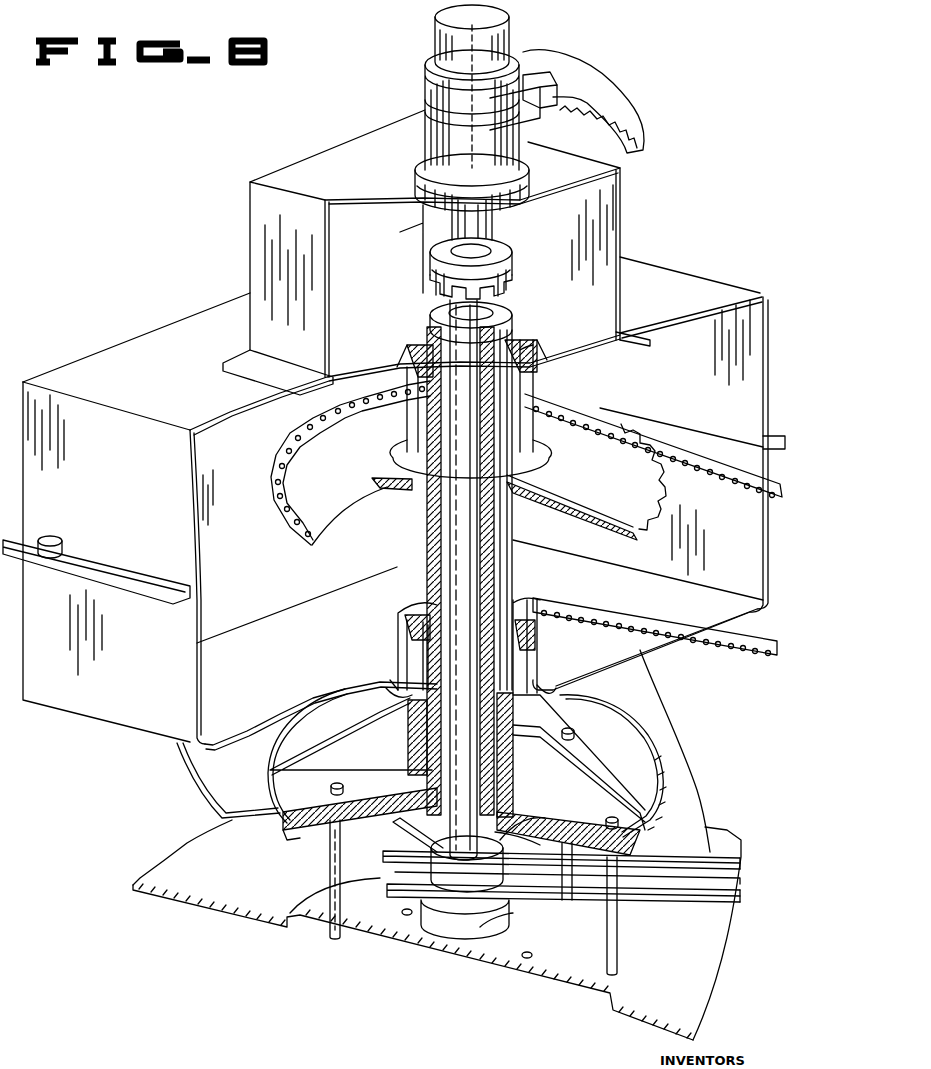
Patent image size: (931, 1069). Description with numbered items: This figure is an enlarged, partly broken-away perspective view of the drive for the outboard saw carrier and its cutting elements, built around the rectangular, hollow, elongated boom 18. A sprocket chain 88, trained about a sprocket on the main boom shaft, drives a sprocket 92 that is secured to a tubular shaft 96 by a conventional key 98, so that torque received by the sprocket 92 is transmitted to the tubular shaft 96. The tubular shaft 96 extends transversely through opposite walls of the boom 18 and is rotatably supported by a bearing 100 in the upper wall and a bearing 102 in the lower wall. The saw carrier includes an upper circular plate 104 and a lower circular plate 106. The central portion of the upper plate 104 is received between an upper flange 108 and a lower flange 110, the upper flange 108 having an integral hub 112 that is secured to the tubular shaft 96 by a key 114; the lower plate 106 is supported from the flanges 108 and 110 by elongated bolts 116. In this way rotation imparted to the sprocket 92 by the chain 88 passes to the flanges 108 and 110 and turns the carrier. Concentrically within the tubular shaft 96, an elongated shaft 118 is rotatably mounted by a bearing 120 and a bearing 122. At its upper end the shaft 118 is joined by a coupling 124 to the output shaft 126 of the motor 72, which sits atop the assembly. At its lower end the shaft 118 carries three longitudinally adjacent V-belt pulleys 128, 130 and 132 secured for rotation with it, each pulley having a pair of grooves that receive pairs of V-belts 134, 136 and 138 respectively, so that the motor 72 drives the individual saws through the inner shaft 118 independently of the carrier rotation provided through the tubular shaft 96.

The boom 18 is at (165, 326).
The motor 72 is at (427, 89).
The sprocket chain 88 is at (287, 505).
The sprocket 92 is at (362, 457).
The tubular shaft 96 is at (430, 530).
The key 98 is at (400, 483).
The bearing 100 is at (420, 362).
The bearing 102 is at (407, 627).
The upper circular plate 104 is at (213, 763).
The lower circular plate 106 is at (160, 872).
The upper flange 108 is at (320, 722).
The lower flange 110 is at (307, 835).
The hub 112 is at (418, 733).
The key 114 is at (490, 736).
The elongated bolts 116 is at (333, 893).
The elongated shaft 118 is at (463, 567).
The bearing 120 is at (447, 330).
The bearing 122 is at (437, 807).
The coupling 124 is at (495, 262).
The output shaft 126 is at (480, 230).
The V-belt pulley 128 is at (500, 840).
The V-belt pulley 130 is at (503, 883).
The V-belt pulley 132 is at (467, 927).
The V-belts 134 is at (392, 862).
The V-belts 136 is at (593, 900).
The V-belts 138 is at (393, 817).